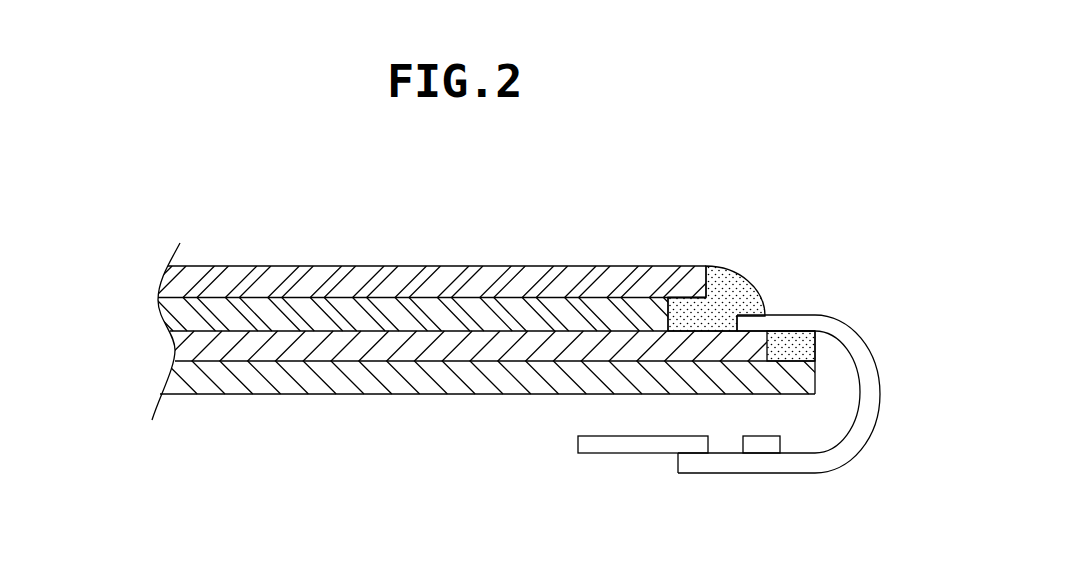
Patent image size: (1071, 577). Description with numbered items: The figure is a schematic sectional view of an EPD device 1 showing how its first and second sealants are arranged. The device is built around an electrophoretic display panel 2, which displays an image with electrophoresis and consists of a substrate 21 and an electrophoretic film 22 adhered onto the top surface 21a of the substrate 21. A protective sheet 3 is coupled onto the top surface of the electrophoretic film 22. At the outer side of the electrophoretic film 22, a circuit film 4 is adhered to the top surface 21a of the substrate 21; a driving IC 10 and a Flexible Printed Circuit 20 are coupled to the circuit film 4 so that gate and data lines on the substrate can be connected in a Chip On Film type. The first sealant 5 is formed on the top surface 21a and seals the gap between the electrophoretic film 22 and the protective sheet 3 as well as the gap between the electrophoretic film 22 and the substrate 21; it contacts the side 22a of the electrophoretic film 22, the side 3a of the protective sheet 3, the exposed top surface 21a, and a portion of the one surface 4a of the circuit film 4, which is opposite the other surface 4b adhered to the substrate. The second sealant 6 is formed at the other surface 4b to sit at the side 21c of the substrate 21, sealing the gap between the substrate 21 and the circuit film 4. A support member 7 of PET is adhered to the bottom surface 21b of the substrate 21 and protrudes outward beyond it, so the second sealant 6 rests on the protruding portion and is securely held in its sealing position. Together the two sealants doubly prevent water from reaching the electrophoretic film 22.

The EPD device 1 is at (808, 172).
The electrophoretic display panel 2 is at (76, 299).
The protective sheet 3 is at (165, 280).
The side of the protective sheet 3a is at (712, 272).
The circuit film 4 is at (840, 458).
The one surface of the circuit film 4a is at (862, 335).
The other surface of the circuit film 4b is at (848, 362).
The first sealant 5 is at (745, 280).
The second sealant 6 is at (793, 345).
The support member 7 is at (275, 373).
The driving IC 10 is at (762, 440).
The Flexible Printed Circuit 20 is at (637, 440).
The substrate 21 is at (176, 346).
The top surface of the substrate 21a is at (488, 331).
The bottom surface of the substrate 21b is at (440, 362).
The side of the substrate 21c is at (795, 367).
The electrophoretic film 22 is at (168, 308).
The side of the electrophoretic film 22a is at (682, 300).